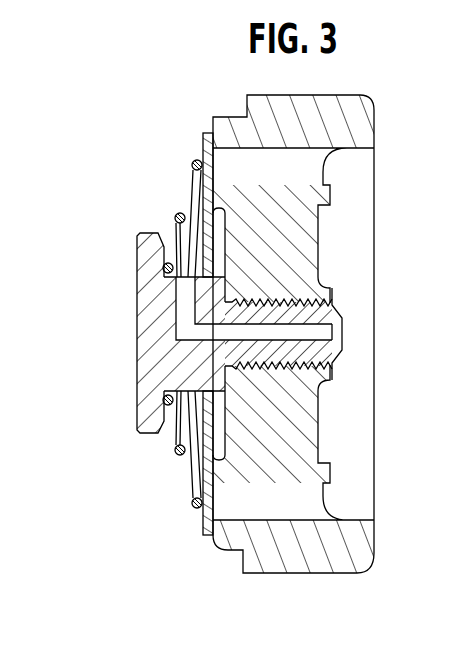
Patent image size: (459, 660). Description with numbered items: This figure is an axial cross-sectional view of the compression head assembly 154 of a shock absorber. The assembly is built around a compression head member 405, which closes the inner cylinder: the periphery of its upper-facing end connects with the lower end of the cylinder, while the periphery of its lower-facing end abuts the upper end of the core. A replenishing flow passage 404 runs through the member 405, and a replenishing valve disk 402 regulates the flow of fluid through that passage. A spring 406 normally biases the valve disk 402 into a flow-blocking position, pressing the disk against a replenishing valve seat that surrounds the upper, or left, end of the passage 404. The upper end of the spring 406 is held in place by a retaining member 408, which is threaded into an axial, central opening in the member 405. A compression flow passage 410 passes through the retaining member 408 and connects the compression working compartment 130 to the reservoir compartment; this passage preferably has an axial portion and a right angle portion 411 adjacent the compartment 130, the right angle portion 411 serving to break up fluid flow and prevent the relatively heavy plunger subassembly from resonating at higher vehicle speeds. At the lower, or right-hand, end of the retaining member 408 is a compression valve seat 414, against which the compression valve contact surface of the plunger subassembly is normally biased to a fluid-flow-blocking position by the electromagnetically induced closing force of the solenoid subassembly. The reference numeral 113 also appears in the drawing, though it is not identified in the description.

The compression working compartment 130 is at (44, 344).
The plug body 113 is at (126, 371).
The compression head assembly 154 is at (236, 88).
The replenishing valve disk 402 is at (190, 130).
The replenishing flow passage 404 is at (228, 160).
The compression head member 405 is at (205, 132).
The spring 406 is at (178, 213).
The retaining member 408 is at (135, 264).
The compression flow passage 410 is at (343, 315).
The right angle portion 411 is at (185, 326).
The compression valve seat 414 is at (344, 352).